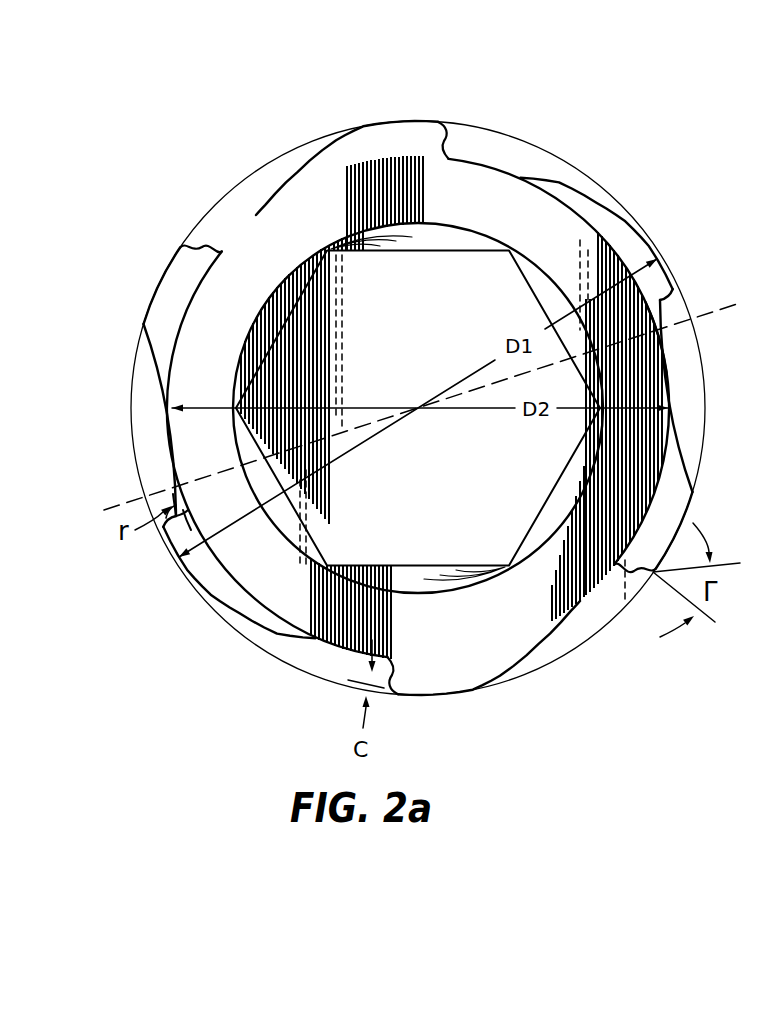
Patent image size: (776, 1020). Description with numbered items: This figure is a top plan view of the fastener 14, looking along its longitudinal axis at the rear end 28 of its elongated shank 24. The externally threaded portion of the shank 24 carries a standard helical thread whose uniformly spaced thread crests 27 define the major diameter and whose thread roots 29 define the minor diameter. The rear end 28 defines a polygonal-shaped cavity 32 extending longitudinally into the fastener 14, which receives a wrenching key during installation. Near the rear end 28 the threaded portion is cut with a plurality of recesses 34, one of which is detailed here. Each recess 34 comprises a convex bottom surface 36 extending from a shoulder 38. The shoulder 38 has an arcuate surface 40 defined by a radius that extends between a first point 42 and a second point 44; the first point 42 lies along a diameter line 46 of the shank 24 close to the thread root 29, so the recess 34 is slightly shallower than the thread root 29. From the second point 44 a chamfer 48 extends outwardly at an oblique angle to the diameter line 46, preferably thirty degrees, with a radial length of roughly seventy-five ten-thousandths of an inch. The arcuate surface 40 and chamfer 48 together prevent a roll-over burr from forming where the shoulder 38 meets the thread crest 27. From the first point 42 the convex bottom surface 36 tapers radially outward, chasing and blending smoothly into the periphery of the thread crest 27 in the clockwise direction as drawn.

The fastener 14 is at (650, 98).
The elongated shank 24 is at (540, 137).
The thread crests 27 is at (647, 228).
The rear end 28 is at (267, 235).
The thread roots 29 is at (672, 449).
The polygonal-shaped cavity 32 is at (430, 251).
The recess 34 is at (684, 356).
The convex bottom surface 36 is at (683, 405).
The shoulder 38 is at (670, 314).
The arcuate surface 40 is at (189, 509).
The first point 42 is at (178, 478).
The second point 44 is at (190, 521).
The diameter line 46 is at (162, 516).
The chamfer 48 is at (669, 286).